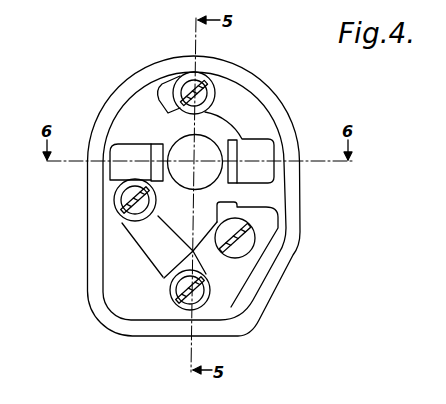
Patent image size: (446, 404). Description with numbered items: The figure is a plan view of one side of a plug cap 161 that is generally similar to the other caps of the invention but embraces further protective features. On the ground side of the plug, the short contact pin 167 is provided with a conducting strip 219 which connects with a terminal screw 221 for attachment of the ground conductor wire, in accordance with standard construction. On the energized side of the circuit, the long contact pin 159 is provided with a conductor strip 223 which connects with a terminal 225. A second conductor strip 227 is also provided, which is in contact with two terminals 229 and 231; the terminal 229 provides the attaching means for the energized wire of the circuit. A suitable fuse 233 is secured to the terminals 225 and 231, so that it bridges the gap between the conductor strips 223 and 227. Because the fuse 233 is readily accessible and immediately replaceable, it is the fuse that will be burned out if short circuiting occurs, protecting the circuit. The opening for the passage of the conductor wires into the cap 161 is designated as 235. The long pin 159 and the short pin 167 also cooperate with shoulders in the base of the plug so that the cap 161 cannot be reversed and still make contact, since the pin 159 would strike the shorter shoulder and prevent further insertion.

The long contact pin 159 is at (152, 168).
The cap 161 is at (302, 206).
The contact pin 167 is at (236, 151).
The conducting strip 219 is at (237, 107).
The terminal screw 221 is at (182, 80).
The conductor strip 223 is at (128, 152).
The terminal 225 is at (123, 224).
The second conductor strip 227 is at (218, 265).
The terminal 229 is at (253, 244).
The terminal 231 is at (200, 300).
The fuse 233 is at (158, 252).
The opening 235 is at (172, 134).